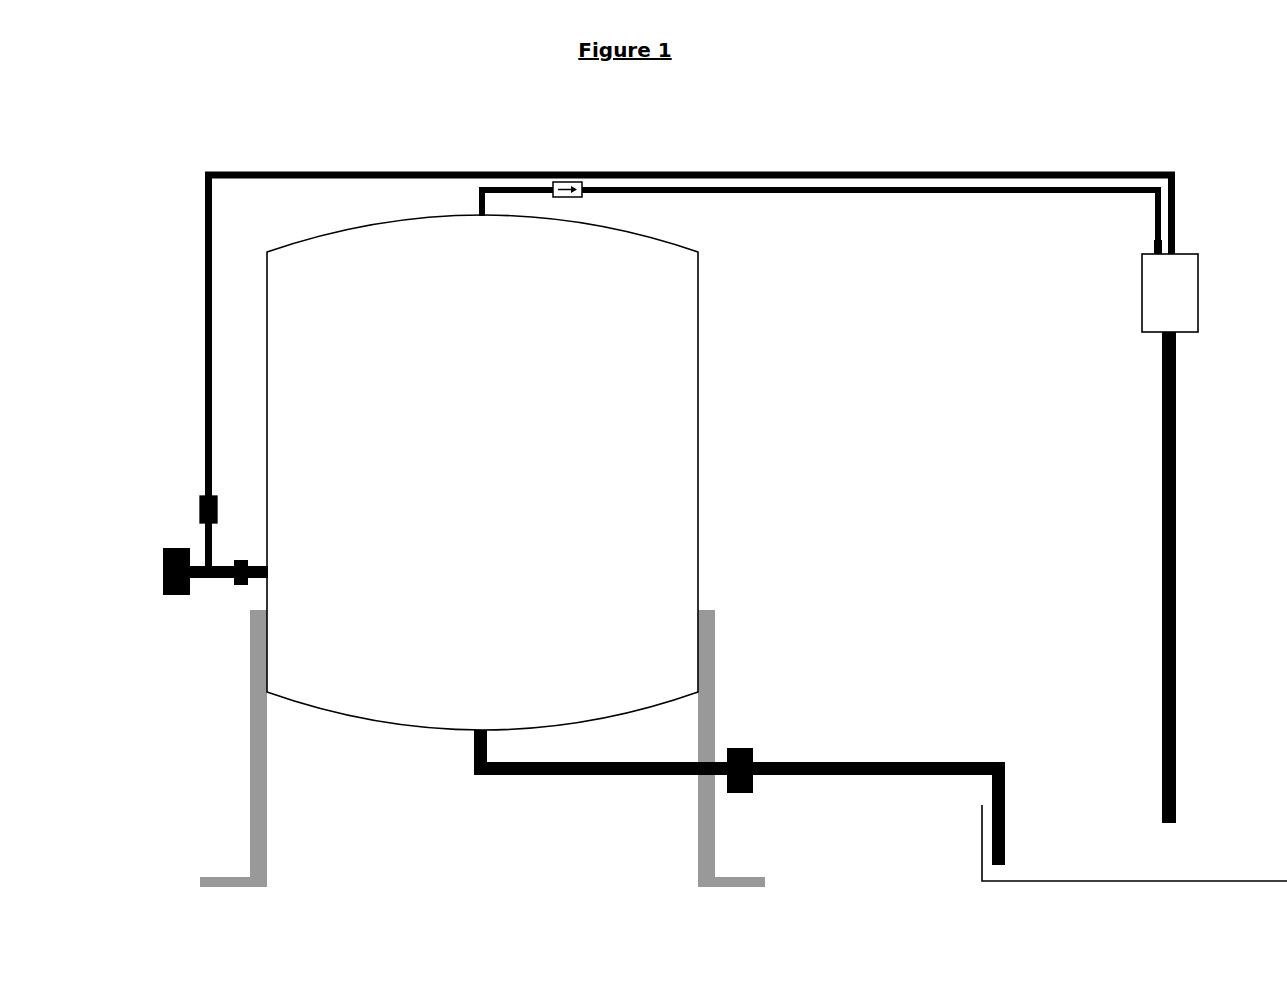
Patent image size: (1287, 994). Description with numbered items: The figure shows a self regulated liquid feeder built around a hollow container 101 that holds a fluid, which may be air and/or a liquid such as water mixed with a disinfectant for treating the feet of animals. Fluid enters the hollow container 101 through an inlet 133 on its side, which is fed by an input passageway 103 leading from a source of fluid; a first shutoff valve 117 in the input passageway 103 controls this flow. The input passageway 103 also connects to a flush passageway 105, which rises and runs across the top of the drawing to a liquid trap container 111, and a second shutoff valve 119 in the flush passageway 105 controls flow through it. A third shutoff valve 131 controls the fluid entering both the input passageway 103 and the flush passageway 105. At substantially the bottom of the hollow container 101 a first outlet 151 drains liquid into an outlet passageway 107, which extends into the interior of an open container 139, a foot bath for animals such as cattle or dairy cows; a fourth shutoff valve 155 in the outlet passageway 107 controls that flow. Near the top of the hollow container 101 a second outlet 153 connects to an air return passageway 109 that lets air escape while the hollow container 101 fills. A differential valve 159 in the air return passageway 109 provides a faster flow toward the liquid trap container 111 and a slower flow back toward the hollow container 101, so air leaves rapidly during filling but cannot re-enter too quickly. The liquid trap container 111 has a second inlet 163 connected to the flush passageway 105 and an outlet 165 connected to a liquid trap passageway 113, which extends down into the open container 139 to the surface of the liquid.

The hollow container 101 is at (482, 472).
The input passageway 103 is at (212, 580).
The flush passageway 105 is at (792, 167).
The outlet passageway 107 is at (570, 790).
The air return passageway 109 is at (755, 202).
The liquid trap container 111 is at (1189, 287).
The liquid trap passageway 113 is at (1148, 545).
The first shutoff valve 117 is at (241, 550).
The second shutoff valve 119 is at (197, 470).
The third shutoff valve 131 is at (143, 547).
The inlet 133 is at (265, 577).
The open container 139 is at (1134, 843).
The first outlet 151 is at (460, 737).
The second outlet 153 is at (467, 203).
The fourth shutoff valve 155 is at (772, 730).
The differential valve 159 is at (547, 165).
The second inlet 163 is at (1182, 248).
The outlet 165 is at (1150, 337).